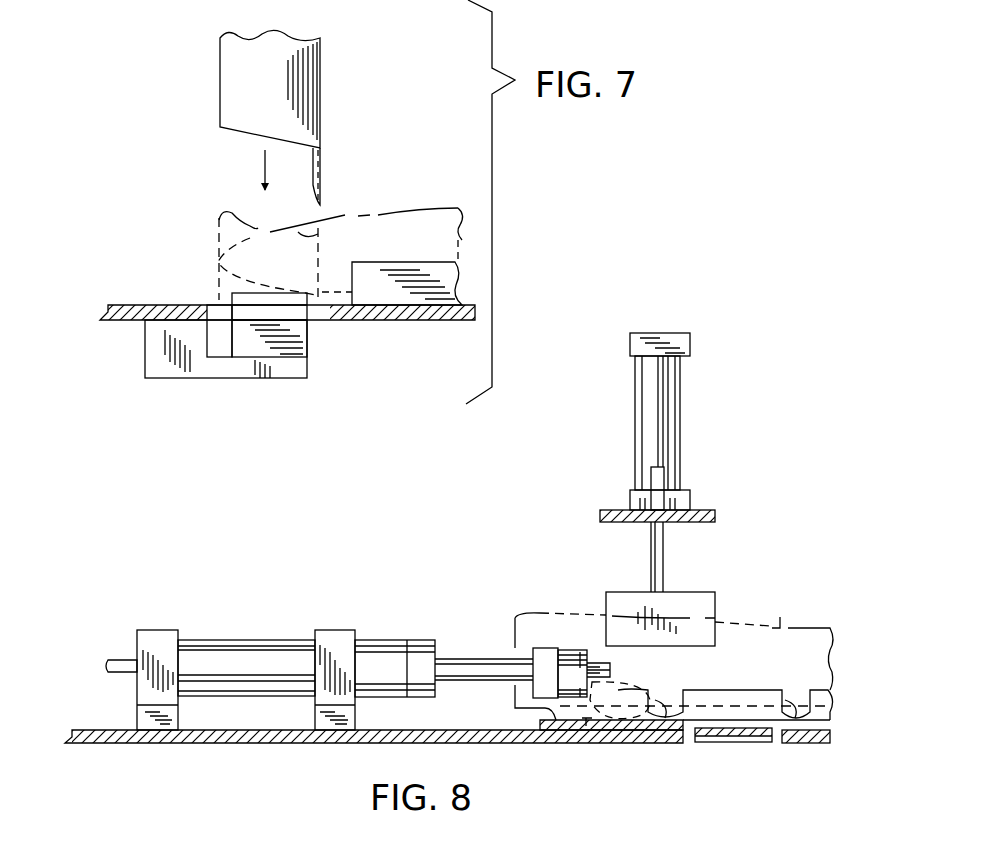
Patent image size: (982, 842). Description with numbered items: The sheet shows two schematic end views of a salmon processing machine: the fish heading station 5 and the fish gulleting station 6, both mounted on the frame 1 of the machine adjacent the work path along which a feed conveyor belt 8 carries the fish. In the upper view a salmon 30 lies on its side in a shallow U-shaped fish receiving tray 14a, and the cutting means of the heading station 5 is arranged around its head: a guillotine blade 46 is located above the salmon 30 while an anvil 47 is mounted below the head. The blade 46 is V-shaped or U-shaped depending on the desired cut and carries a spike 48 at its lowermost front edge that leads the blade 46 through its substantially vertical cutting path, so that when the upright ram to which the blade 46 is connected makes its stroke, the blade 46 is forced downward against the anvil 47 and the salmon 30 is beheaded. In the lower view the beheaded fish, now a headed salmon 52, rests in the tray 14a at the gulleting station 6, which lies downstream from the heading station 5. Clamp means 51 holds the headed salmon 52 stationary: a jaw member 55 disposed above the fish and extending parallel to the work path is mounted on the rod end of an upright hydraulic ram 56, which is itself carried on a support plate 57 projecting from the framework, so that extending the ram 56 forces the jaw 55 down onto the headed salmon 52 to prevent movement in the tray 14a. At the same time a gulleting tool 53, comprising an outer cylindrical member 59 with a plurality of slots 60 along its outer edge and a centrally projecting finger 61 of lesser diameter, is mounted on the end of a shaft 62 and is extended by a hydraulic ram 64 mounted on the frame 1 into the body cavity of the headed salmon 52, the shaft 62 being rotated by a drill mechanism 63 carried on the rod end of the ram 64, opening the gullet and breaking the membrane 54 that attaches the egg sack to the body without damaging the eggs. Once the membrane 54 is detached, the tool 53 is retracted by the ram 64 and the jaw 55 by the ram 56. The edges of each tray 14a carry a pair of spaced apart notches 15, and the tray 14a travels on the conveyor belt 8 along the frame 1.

In FIG. 7, the frame 1 is at (425, 324).
In FIG. 8, the frame 1 is at (272, 744).
In FIG. 7, the fish heading station 5 is at (157, 168).
In FIG. 8, the fish gulleting station 6 is at (515, 548).
In FIG. 8, the feed conveyor belt 8 is at (737, 743).
In FIG. 7, the fish receiving tray 14a is at (463, 283).
In FIG. 8, the fish receiving tray 14a is at (736, 690).
In FIG. 8, the notches 15 is at (688, 722).
In FIG. 7, the salmon 30 is at (422, 212).
In FIG. 7, the guillotine blade 46 is at (230, 68).
In FIG. 7, the anvil 47 is at (252, 348).
In FIG. 7, the spike 48 is at (325, 165).
In FIG. 8, the clamp means 51 is at (636, 560).
In FIG. 8, the headed salmon 52 is at (780, 616).
In FIG. 8, the gulleting tool 53 is at (466, 640).
In FIG. 8, the membrane 54 is at (594, 712).
In FIG. 8, the jaw member 55 is at (698, 598).
In FIG. 8, the upright hydraulic ram 56 is at (672, 408).
In FIG. 8, the support plate 57 is at (610, 508).
In FIG. 8, the outer cylindrical member 59 is at (545, 648).
In FIG. 8, the slots 60 is at (585, 662).
In FIG. 8, the finger 61 is at (612, 672).
In FIG. 8, the piston rod 62 is at (478, 682).
In FIG. 8, the drill mechanism 63 is at (388, 642).
In FIG. 8, the hydraulic ram 64 is at (248, 642).